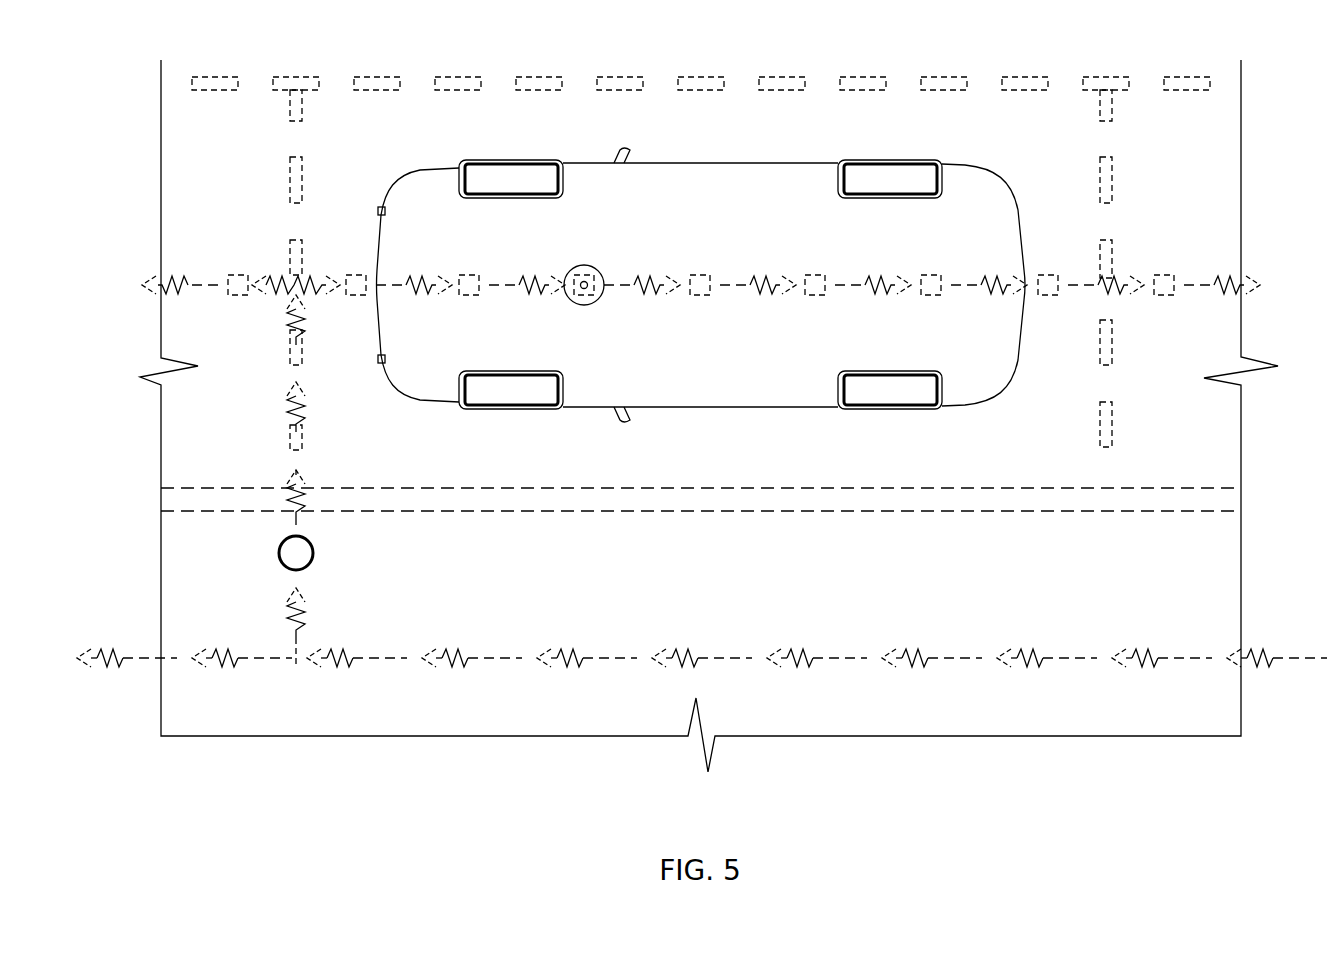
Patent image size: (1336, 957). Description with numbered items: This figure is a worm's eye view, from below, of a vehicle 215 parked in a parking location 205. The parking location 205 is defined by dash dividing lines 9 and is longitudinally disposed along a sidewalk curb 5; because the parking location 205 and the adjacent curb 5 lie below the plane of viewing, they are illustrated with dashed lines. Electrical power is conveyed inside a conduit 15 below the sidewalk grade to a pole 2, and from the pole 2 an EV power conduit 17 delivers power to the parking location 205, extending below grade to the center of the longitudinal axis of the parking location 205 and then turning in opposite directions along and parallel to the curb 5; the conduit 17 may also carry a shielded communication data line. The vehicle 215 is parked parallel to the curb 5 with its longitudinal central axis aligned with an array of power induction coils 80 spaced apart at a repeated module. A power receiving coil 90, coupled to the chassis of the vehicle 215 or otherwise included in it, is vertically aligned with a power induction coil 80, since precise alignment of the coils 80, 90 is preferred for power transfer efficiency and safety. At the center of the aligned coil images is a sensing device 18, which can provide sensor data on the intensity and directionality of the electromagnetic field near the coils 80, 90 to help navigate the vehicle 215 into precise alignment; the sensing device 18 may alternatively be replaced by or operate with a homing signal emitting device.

The pole 2 is at (315, 553).
The sidewalk curb 5 is at (941, 500).
The dash dividing lines 9 is at (383, 77).
The conduit 15 is at (566, 645).
The EV power conduit 17 is at (180, 285).
The sensing device 18 is at (596, 276).
The power induction coil 80 is at (235, 297).
The power receiving coil 90 is at (584, 265).
The parking location 205 is at (754, 462).
The vehicle 215 is at (705, 210).